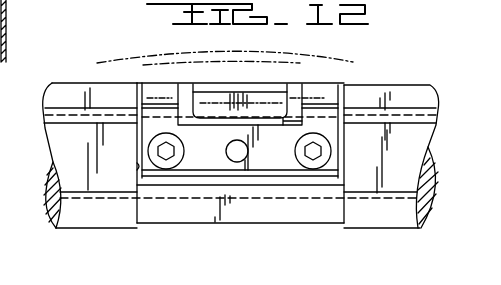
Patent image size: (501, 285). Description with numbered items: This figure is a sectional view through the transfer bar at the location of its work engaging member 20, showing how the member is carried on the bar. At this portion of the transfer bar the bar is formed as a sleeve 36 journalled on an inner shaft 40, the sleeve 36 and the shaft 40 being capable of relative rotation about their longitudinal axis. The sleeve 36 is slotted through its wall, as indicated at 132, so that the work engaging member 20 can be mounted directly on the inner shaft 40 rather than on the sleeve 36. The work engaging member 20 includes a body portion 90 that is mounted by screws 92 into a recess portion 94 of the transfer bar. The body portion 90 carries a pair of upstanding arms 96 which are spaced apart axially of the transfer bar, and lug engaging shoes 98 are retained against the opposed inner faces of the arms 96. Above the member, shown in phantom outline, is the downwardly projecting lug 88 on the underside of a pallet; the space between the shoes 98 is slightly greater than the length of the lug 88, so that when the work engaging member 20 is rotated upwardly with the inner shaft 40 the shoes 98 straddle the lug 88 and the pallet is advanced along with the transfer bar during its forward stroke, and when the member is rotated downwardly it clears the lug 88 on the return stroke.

The work engaging member 20 is at (348, 83).
The sleeve 36 is at (402, 215).
The inner shaft 40 is at (46, 180).
The lug 88 is at (264, 82).
The body portion 90 is at (277, 158).
The screw 92 is at (172, 158).
The recess portion 94 is at (137, 167).
The upstanding arm 96 is at (164, 93).
The lug engaging shoe 98 is at (184, 96).
The slot 132 is at (156, 211).